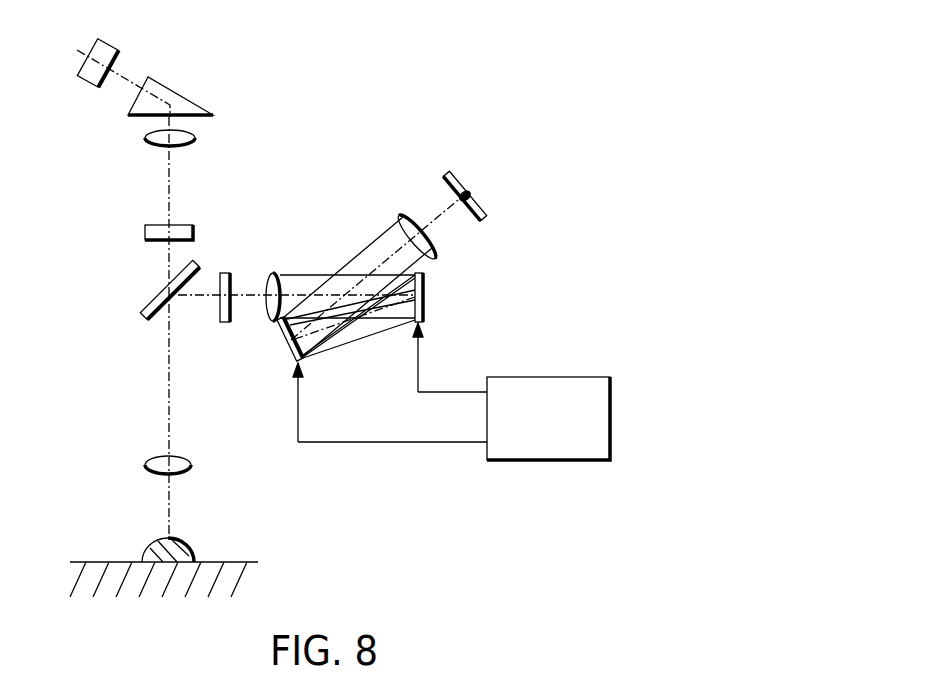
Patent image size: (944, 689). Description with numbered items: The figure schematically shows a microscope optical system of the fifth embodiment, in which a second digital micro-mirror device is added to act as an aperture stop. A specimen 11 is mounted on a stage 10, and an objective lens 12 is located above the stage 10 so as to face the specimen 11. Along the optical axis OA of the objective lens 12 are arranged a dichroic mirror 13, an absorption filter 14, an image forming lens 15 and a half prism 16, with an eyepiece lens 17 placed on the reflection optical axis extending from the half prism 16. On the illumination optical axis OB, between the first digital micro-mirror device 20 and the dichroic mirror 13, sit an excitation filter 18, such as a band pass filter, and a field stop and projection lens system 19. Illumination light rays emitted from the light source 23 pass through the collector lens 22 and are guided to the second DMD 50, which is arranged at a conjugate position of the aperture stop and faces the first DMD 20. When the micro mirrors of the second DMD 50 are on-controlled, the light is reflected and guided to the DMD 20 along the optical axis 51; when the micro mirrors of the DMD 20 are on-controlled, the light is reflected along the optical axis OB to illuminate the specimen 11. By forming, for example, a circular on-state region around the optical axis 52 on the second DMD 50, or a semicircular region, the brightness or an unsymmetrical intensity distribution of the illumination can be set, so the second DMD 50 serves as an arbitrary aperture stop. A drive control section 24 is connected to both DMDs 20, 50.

The stage 10 is at (243, 561).
The specimen 11 is at (143, 556).
The objective lens 12 is at (143, 465).
The dichroic mirror 13 is at (138, 313).
The absorption filter 14 is at (143, 232).
The image forming lens 15 is at (147, 137).
The half prism 16 is at (170, 88).
The eyepiece lens 17 is at (110, 50).
The excitation filter 18 is at (223, 271).
The field stop and projection lens system 19 is at (273, 271).
The digital micro-mirror device 20 is at (425, 294).
The collector lens 22 is at (436, 253).
The light source 23 is at (487, 204).
The drive control section 24 is at (612, 422).
The second DMD 50 is at (290, 348).
The optical axis 51 is at (375, 312).
The optical axis 52 is at (373, 270).
The optical axis OA is at (173, 415).
The illumination optical axis OB is at (198, 297).